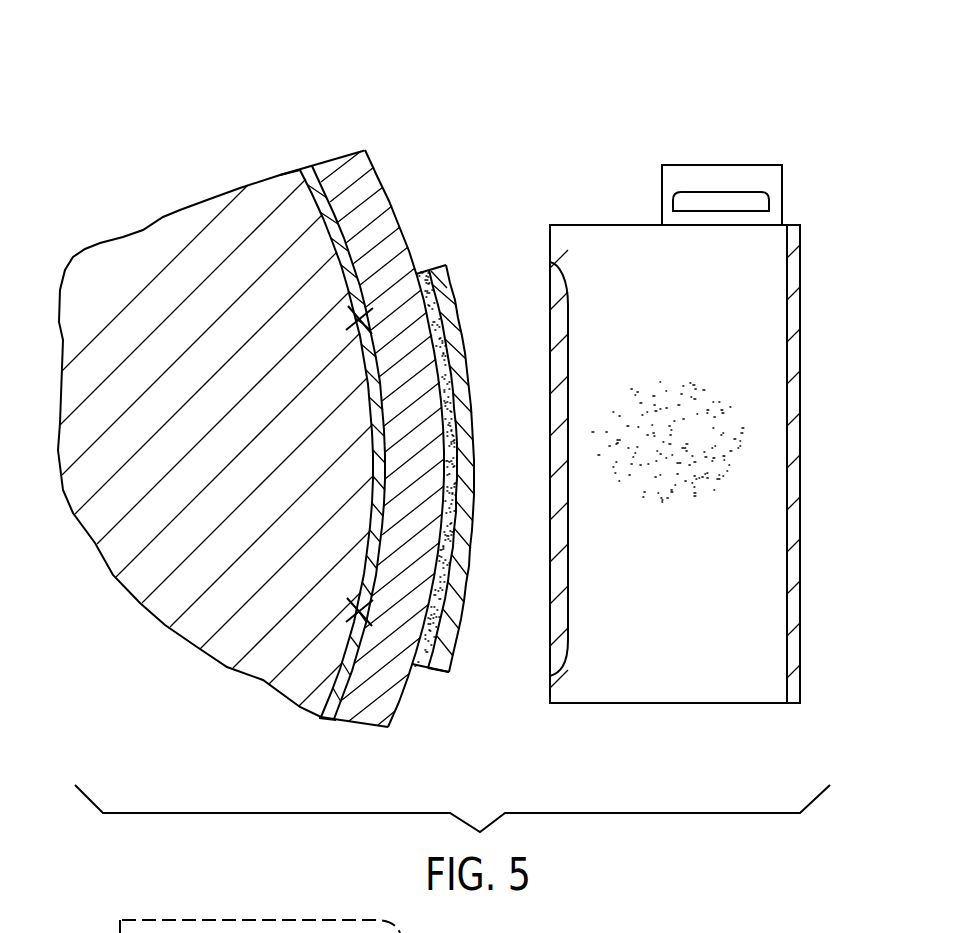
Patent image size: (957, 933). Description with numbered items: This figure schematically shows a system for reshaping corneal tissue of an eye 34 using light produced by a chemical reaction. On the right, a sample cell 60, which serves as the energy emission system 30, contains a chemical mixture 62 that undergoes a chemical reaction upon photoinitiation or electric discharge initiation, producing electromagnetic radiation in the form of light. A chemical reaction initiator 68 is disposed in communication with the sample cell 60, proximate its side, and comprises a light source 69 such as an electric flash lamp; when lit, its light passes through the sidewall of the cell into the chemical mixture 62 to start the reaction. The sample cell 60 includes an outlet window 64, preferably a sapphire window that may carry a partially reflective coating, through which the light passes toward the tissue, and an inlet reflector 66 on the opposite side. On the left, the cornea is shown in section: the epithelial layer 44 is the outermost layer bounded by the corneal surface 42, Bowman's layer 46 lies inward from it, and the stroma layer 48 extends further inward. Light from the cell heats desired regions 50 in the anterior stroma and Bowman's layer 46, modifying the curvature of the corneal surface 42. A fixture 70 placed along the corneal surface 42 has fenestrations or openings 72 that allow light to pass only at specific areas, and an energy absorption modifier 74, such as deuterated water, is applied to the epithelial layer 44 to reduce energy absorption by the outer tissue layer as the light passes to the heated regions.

The energy emission system 30 is at (747, 152).
The eye 34 is at (360, 104).
The corneal surface 42 is at (388, 190).
The epithelial layer 44 is at (357, 725).
The Bowman's layer 46 is at (326, 718).
The stroma layer 48 is at (257, 667).
The desired regions of corneal tissue 50 is at (368, 302).
The sample cell 60 is at (673, 703).
The chemical mixture 62 is at (688, 515).
The outlet window 64 is at (552, 292).
The inlet reflector 66 is at (802, 232).
The chemical reaction initiator 68 is at (783, 164).
The light source 69 is at (694, 197).
The fixture 70 is at (452, 668).
The fenestrations or openings 72 is at (458, 320).
The energy absorption modifier 74 is at (418, 276).